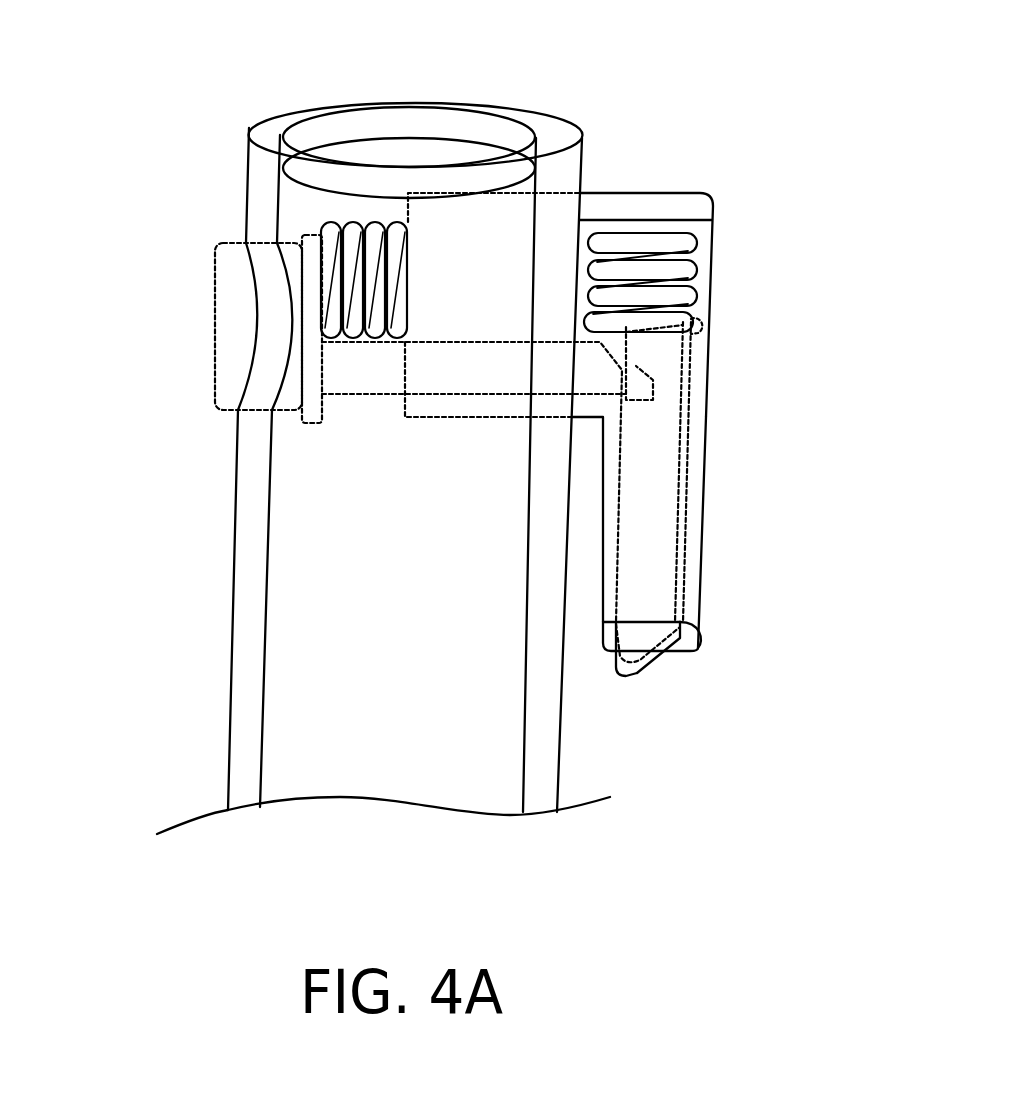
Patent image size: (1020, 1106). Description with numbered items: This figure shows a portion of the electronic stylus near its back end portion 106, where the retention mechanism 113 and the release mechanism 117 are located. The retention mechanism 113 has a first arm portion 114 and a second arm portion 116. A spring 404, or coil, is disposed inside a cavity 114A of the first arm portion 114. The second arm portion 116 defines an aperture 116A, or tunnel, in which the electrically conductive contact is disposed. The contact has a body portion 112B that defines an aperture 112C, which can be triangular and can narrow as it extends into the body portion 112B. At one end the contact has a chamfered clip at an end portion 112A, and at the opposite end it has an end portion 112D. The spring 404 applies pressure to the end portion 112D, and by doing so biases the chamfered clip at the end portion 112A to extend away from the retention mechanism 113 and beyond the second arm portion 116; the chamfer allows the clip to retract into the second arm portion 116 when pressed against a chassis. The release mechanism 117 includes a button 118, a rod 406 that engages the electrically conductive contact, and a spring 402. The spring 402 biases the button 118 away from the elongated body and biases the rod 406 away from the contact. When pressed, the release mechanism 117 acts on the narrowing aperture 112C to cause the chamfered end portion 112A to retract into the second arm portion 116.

The back end portion 106 is at (321, 103).
The release mechanism 117 is at (145, 262).
The spring 402 is at (330, 218).
The button 118 is at (213, 323).
The rod 406 is at (378, 388).
The first arm portion 114 is at (598, 200).
The cavity 114A is at (592, 250).
The spring 404 is at (682, 283).
The end portion 112D is at (660, 325).
The aperture 112C is at (640, 373).
The body portion 112B is at (663, 403).
The retention mechanism 113 is at (845, 483).
The aperture 116A is at (665, 547).
The second arm portion 116 is at (682, 605).
The end portion 112A is at (637, 670).